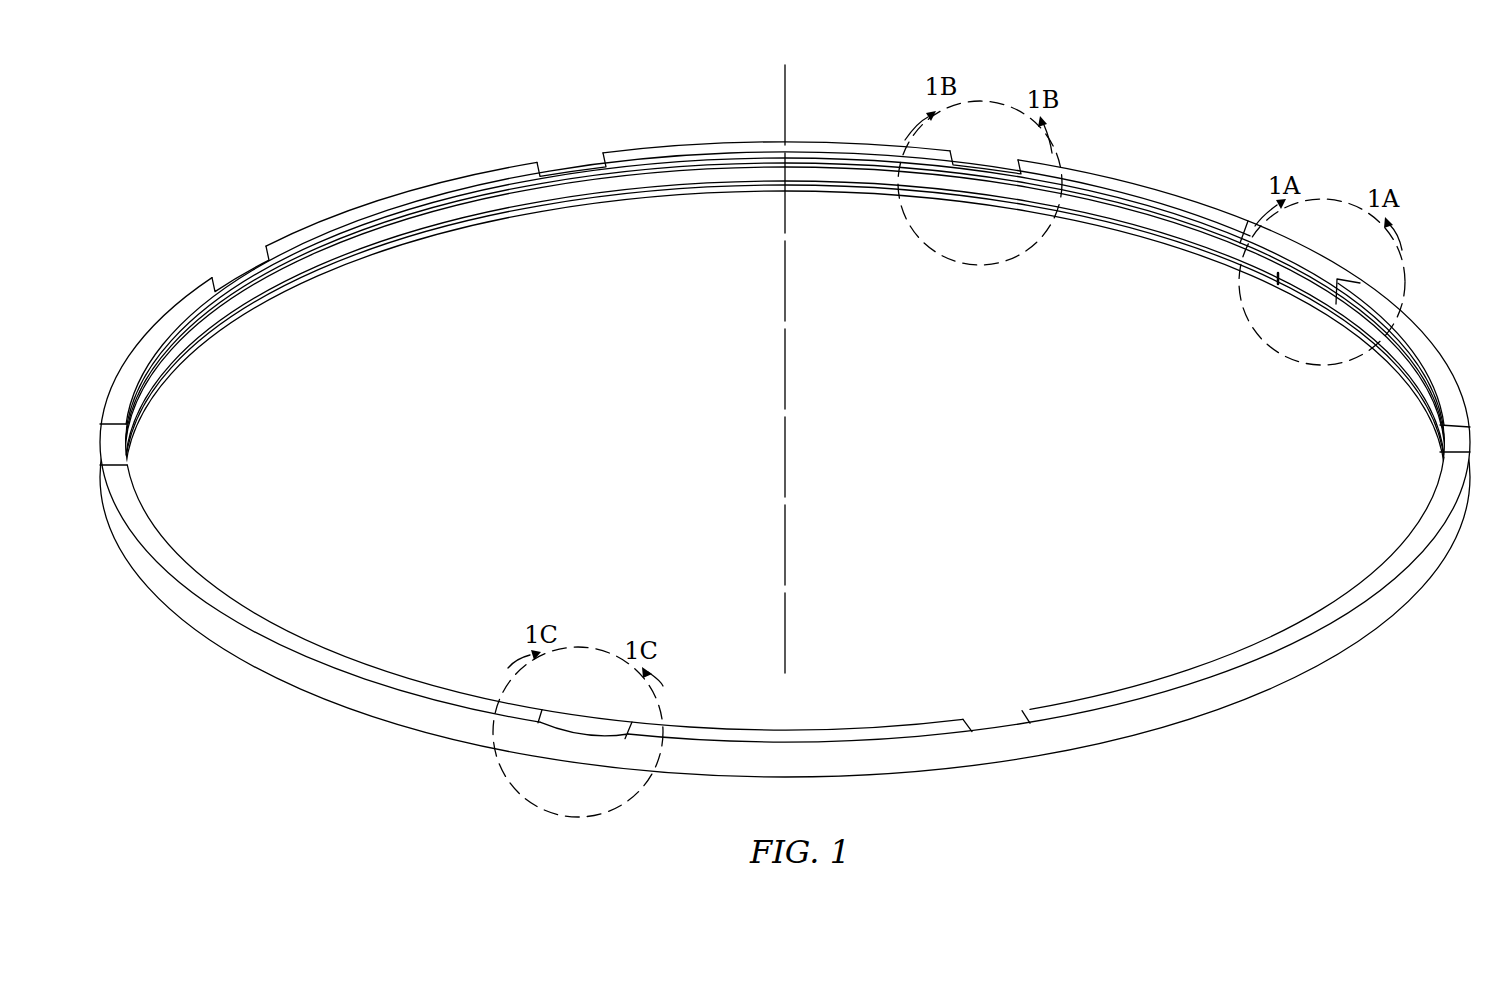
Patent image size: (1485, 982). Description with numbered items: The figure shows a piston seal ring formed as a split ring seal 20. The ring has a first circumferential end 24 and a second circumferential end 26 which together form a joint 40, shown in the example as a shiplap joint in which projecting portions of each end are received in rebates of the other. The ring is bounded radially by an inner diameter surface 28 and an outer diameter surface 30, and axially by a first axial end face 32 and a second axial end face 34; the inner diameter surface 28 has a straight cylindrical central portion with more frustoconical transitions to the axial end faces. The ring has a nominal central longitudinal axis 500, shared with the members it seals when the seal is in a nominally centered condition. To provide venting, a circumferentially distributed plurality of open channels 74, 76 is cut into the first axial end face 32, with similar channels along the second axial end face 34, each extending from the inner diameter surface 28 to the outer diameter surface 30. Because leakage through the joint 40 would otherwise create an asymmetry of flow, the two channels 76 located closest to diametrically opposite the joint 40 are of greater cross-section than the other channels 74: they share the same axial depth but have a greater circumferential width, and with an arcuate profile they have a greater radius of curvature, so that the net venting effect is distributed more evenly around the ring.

The split ring seal 20 is at (246, 150).
The first circumferential end 24 is at (1252, 273).
The second circumferential end 26 is at (1354, 303).
The inner diameter surface 28 is at (684, 180).
The outer diameter surface 30 is at (1112, 722).
The first axial end face 32 is at (1234, 717).
The second axial end face 34 is at (1188, 673).
The joint 40 is at (1295, 322).
The channels 74 is at (579, 230).
The channels 76 is at (142, 447).
The central longitudinal axis 500 is at (790, 466).